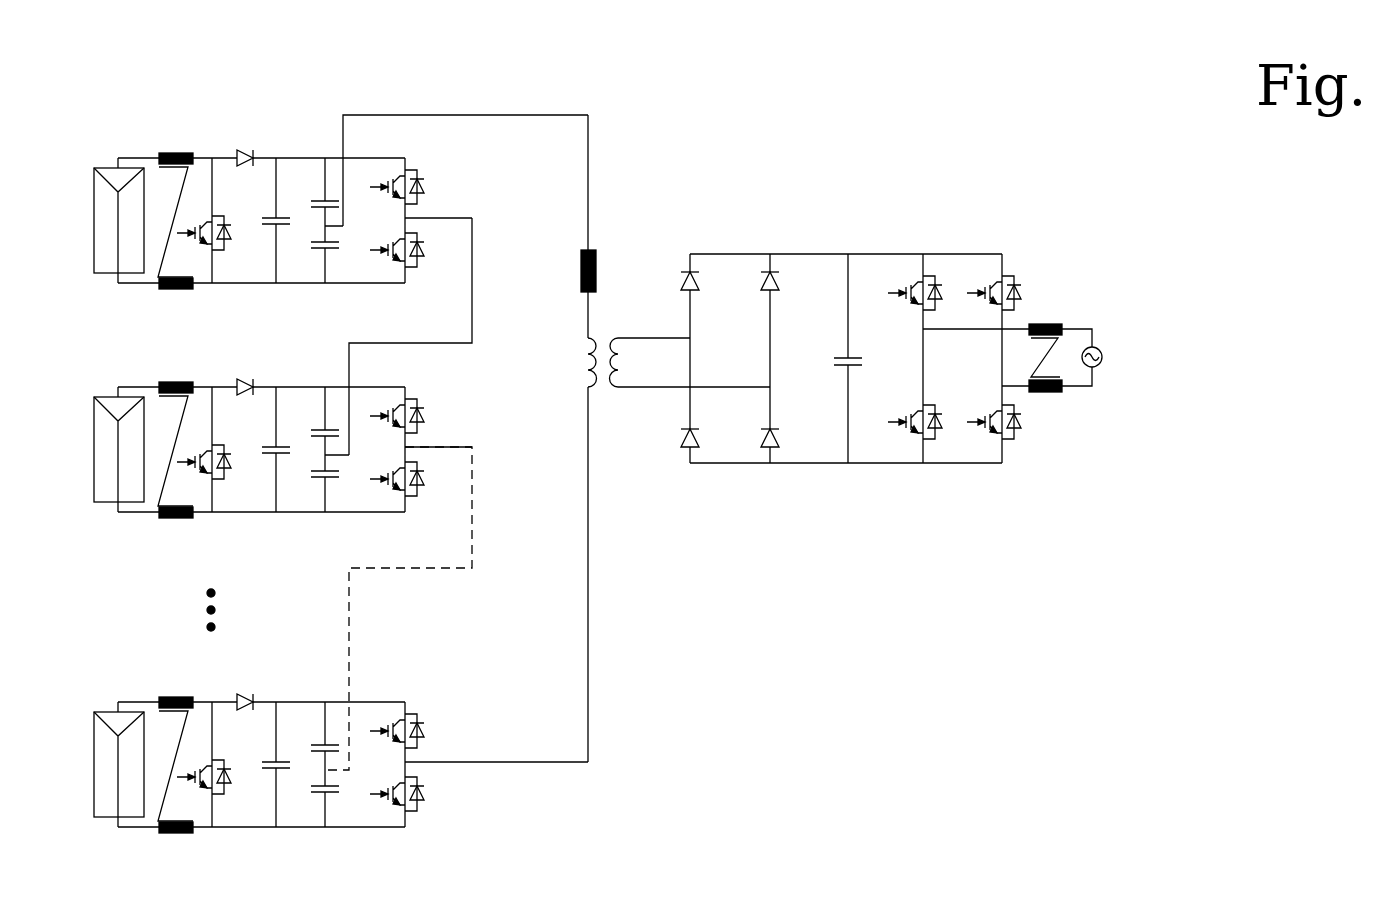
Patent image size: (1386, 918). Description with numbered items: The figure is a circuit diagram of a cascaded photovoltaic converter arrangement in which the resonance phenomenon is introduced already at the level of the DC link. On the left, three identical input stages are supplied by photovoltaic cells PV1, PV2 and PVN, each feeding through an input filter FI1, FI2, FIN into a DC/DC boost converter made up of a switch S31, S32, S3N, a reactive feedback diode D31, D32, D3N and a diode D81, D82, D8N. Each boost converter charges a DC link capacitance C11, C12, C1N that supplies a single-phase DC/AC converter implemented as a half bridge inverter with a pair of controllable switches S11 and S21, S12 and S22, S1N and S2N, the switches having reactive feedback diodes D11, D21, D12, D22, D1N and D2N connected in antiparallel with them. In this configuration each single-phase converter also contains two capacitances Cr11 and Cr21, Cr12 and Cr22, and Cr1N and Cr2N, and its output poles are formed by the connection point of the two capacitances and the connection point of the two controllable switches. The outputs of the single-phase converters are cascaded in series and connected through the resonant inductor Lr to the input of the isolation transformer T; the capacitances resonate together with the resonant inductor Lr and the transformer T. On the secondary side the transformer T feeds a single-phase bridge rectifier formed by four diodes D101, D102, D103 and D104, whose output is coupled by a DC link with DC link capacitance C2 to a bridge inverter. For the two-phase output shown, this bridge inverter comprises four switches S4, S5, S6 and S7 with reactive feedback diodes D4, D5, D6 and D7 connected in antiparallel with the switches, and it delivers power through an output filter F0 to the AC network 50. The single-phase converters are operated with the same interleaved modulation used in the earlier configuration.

The AC network 50 is at (1100, 347).
The photovoltaic cell PV1 is at (96, 220).
The photovoltaic cell PV2 is at (96, 449).
The photovoltaic cell PVN is at (96, 764).
The input filter FI1 is at (175, 207).
The input filter FI2 is at (175, 436).
The input filter FIN is at (175, 751).
The diode D81 is at (249, 146).
The diode D82 is at (249, 375).
The diode D8N is at (248, 690).
The switch S31 is at (193, 242).
The switch S32 is at (193, 471).
The switch S3N is at (192, 786).
The reactive feedback diode D31 is at (231, 220).
The reactive feedback diode D32 is at (231, 449).
The reactive feedback diode D3N is at (232, 764).
The DC link capacitance C11 is at (265, 220).
The DC link capacitance C12 is at (265, 449).
The DC link capacitance C1N is at (264, 764).
The capacitance Cr11 is at (314, 192).
The capacitance Cr21 is at (314, 254).
The capacitance Cr12 is at (314, 421).
The capacitance Cr22 is at (314, 483).
The capacitance Cr1N is at (313, 736).
The capacitance Cr2N is at (313, 798).
The controllable switch S11 is at (386, 197).
The controllable switch S21 is at (386, 261).
The controllable switch S12 is at (386, 426).
The controllable switch S22 is at (386, 490).
The controllable switch S1N is at (385, 741).
The controllable switch S2N is at (385, 805).
The reactive feedback diode D11 is at (435, 185).
The reactive feedback diode D21 is at (435, 250).
The reactive feedback diode D12 is at (426, 404).
The reactive feedback diode D22 is at (435, 478).
The reactive feedback diode D1N is at (425, 716).
The reactive feedback diode D2N is at (436, 793).
The resonant inductor Lr is at (599, 271).
The isolation transformer T is at (679, 377).
The diode D101 is at (712, 291).
The diode D102 is at (792, 291).
The diode D103 is at (712, 424).
The diode D104 is at (792, 424).
The DC link capacitance C2 is at (840, 358).
The switch S4 is at (905, 303).
The switch S5 is at (984, 303).
The switch S6 is at (905, 432).
The switch S7 is at (984, 432).
The reactive feedback diode D4 is at (943, 283).
The reactive feedback diode D5 is at (1025, 283).
The reactive feedback diode D6 is at (943, 412).
The reactive feedback diode D7 is at (1025, 412).
The output filter F0 is at (1045, 346).